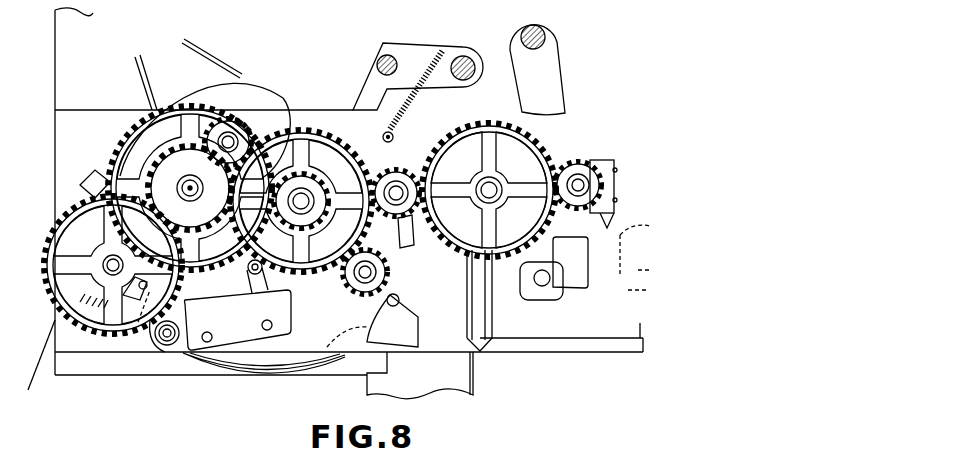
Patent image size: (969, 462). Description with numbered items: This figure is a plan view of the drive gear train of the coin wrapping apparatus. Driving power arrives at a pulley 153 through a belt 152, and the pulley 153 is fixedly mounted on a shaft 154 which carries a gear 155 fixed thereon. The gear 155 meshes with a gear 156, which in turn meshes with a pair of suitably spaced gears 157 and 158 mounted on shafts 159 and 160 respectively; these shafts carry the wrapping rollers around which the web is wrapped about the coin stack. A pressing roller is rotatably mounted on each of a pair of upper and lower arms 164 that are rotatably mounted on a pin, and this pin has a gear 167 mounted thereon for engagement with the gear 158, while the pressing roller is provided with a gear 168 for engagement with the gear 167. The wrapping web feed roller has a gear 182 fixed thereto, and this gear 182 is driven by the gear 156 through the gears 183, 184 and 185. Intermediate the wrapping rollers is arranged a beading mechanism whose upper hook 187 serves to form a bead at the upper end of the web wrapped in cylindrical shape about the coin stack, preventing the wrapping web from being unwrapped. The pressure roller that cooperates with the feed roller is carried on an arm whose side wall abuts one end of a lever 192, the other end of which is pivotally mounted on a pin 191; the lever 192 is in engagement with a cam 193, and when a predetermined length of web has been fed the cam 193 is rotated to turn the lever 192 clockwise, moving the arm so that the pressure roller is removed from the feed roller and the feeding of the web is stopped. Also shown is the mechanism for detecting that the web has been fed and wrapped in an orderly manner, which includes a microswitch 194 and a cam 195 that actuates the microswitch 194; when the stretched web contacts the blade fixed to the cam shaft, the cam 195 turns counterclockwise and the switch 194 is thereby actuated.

The belt 152 is at (213, 61).
The pulley 153 is at (262, 95).
The shaft 154 is at (245, 145).
The gear 155 is at (253, 140).
The gear 156 is at (358, 146).
The gear 157 is at (372, 292).
The gear 158 is at (394, 137).
The shaft 159 is at (360, 274).
The shaft 160 is at (394, 184).
The arms 164 is at (617, 170).
The gear 167 is at (550, 150).
The gear 168 is at (612, 158).
The gear 182 is at (77, 327).
The gear 183 is at (296, 218).
The gear 184 is at (127, 140).
The gear 185 is at (127, 150).
The upper hook 187 is at (408, 240).
The pin 191 is at (182, 333).
The lever 192 is at (138, 322).
The cam 193 is at (118, 322).
The microswitch 194 is at (248, 353).
The cam 195 is at (238, 305).